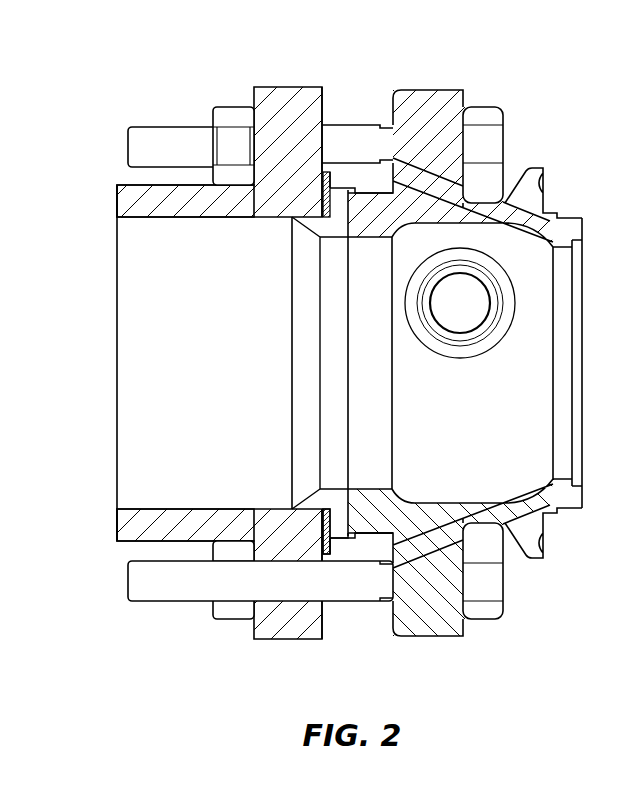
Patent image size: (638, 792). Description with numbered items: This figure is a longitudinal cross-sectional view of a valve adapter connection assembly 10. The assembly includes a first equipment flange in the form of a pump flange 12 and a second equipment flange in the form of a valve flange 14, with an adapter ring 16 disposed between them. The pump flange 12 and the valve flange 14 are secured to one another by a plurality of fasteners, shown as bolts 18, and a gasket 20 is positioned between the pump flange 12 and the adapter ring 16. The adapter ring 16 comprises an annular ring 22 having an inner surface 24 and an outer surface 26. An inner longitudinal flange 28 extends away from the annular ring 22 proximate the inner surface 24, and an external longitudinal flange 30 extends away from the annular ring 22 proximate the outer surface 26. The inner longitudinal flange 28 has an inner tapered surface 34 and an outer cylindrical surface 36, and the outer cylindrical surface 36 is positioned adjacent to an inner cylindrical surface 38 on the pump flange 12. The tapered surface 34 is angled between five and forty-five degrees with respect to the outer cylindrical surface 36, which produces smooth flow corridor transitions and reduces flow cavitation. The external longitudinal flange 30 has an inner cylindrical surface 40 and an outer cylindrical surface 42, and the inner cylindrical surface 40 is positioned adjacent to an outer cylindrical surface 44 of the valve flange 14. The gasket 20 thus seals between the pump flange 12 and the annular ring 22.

The valve adapter connection assembly 10 is at (81, 87).
The pump flange 12 is at (270, 95).
The valve flange 14 is at (448, 95).
The adapter ring 16 is at (333, 440).
The bolts 18 is at (178, 590).
The gasket 20 is at (337, 558).
The annular ring 22 is at (397, 173).
The inner surface 24 is at (337, 255).
The outer surface 26 is at (343, 186).
The inner longitudinal flange 28 is at (333, 243).
The external longitudinal flange 30 is at (381, 162).
The tapered surface 34 is at (335, 228).
The outer cylindrical surface 36 is at (301, 206).
The inner cylindrical surface 38 is at (155, 218).
The inner cylindrical surface 40 is at (357, 532).
The outer cylindrical surface 42 is at (353, 548).
The outer cylindrical surface 44 is at (378, 527).